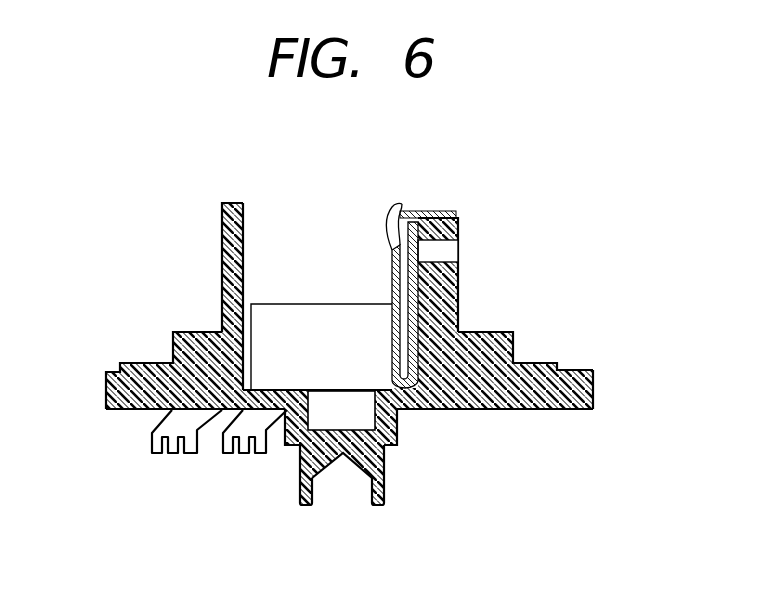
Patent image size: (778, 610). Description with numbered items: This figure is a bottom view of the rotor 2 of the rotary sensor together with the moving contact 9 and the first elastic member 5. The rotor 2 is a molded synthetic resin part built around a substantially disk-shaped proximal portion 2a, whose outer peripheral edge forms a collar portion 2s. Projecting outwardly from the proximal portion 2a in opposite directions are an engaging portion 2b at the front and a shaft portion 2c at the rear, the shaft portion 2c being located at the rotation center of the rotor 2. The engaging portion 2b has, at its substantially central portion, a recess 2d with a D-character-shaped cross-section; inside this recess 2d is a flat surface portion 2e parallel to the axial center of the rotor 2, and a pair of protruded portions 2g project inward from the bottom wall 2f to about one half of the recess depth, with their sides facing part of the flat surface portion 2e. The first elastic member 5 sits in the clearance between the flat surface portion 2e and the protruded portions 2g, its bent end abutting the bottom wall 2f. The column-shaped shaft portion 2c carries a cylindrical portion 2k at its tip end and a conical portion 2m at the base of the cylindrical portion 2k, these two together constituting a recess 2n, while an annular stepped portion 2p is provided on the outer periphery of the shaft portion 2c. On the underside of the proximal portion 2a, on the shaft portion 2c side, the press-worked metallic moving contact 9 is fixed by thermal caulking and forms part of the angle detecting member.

The rotor 2 is at (545, 282).
The proximal portion 2a is at (480, 355).
The engaging portion 2b is at (231, 262).
The shaft portion 2c is at (403, 494).
The recess 2d is at (295, 238).
The flat surface portion 2e is at (424, 292).
The bottom wall 2f is at (276, 392).
The protruded portions 2g is at (322, 322).
The cylindrical portion 2k is at (383, 495).
The conical portion 2m is at (382, 462).
The recess 2n is at (338, 480).
The annular stepped portion 2p is at (391, 452).
The collar portion 2s is at (596, 392).
The first elastic member 5 is at (386, 266).
The moving contact 9 is at (155, 435).